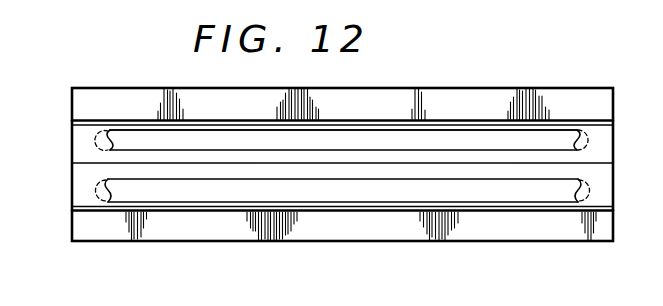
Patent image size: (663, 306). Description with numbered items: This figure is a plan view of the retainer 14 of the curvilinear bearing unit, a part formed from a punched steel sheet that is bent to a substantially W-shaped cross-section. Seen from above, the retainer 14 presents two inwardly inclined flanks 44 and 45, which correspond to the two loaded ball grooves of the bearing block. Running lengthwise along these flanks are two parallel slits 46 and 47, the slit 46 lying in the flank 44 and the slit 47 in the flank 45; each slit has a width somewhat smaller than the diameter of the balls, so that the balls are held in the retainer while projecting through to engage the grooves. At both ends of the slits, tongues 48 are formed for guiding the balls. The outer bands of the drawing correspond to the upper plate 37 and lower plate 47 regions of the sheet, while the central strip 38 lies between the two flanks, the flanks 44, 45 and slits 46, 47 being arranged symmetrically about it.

The retainer 14 is at (458, 63).
The upper plate 37 is at (402, 107).
The intermediate plate 38 is at (490, 157).
The inwardly inclined flank 44 is at (77, 148).
The inwardly inclined flank 45 is at (82, 193).
The slit 46 is at (478, 131).
The slit 47 is at (384, 195).
The tongue 48 is at (112, 131).